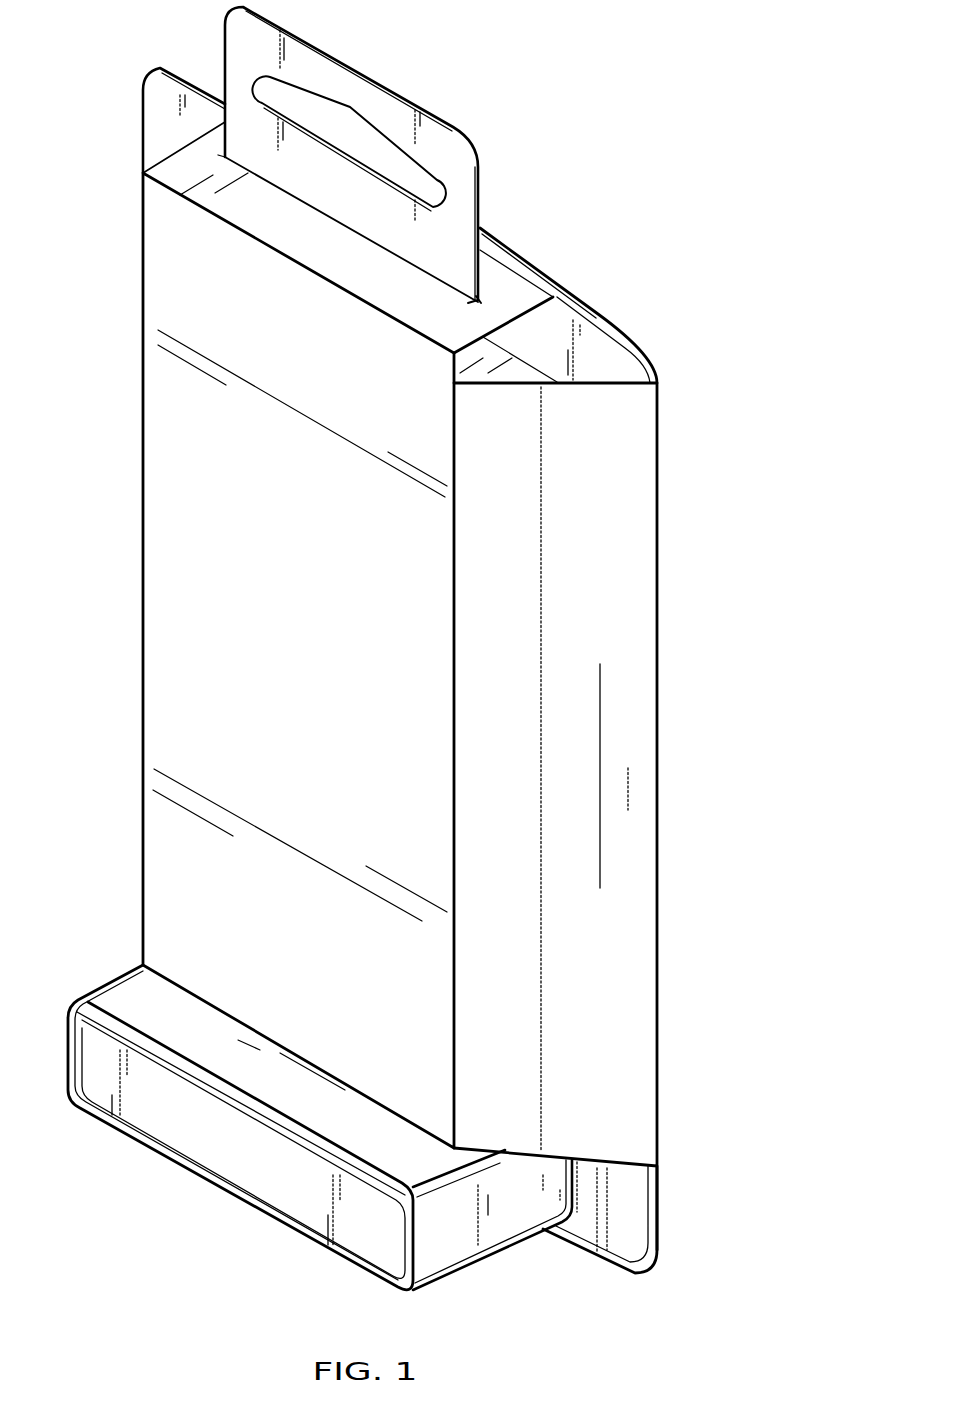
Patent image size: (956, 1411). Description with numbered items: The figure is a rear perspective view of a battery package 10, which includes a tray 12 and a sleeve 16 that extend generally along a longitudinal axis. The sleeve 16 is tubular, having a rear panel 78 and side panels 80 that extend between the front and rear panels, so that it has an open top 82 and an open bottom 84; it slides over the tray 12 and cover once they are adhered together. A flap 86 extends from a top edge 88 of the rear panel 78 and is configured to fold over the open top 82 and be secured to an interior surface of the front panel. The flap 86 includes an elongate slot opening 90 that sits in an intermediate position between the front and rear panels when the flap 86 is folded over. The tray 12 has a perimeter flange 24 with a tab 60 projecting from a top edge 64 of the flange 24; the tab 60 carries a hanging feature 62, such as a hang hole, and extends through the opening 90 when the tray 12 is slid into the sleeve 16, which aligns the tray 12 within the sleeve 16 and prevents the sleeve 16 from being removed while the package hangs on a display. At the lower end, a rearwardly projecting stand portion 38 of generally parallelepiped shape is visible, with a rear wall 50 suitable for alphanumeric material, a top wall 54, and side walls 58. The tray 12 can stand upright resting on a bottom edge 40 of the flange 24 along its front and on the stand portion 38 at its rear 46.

The battery package 10 is at (638, 110).
The tray 12 is at (632, 1188).
The sleeve 16 is at (640, 437).
The perimeter flange 24 is at (630, 1223).
The stand portion 38 is at (135, 1120).
The bottom edge 40 is at (600, 1268).
The rear 46 is at (122, 853).
The rear wall 50 is at (237, 1173).
The top wall 54 is at (120, 990).
The side walls 58 is at (497, 1230).
The tab 60 is at (242, 50).
The hanging feature 62 is at (350, 107).
The top edge 64 is at (575, 318).
The rear panel 78 is at (155, 540).
The side panels 80 is at (640, 641).
The open top 82 is at (592, 357).
The open bottom 84 is at (583, 1165).
The flap 86 is at (187, 172).
The top edge 88 is at (203, 213).
The elongate slot opening 90 is at (485, 293).